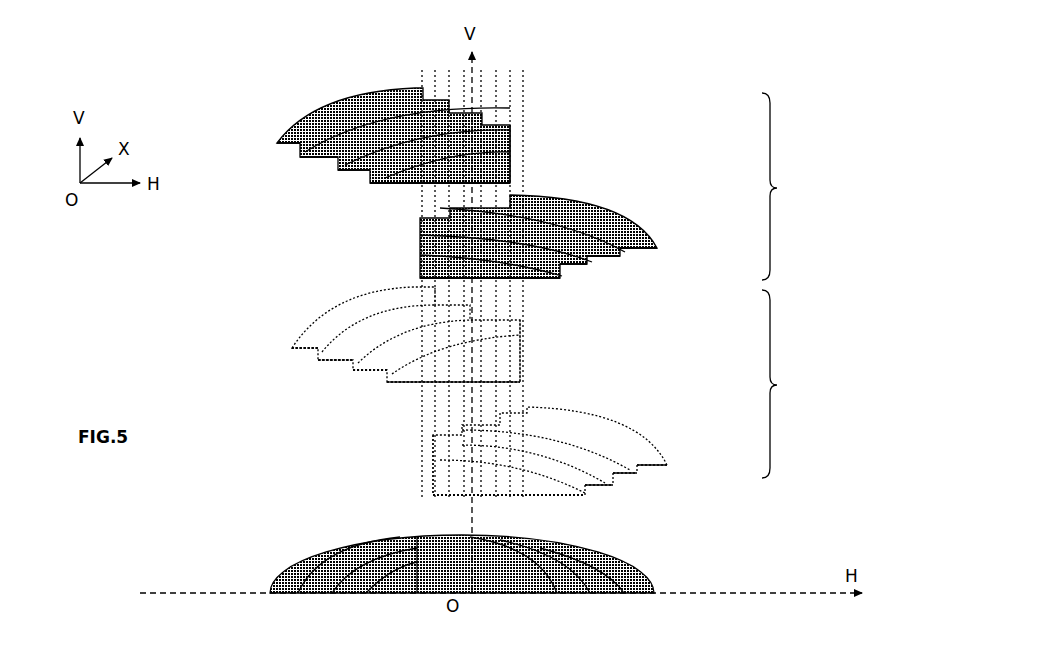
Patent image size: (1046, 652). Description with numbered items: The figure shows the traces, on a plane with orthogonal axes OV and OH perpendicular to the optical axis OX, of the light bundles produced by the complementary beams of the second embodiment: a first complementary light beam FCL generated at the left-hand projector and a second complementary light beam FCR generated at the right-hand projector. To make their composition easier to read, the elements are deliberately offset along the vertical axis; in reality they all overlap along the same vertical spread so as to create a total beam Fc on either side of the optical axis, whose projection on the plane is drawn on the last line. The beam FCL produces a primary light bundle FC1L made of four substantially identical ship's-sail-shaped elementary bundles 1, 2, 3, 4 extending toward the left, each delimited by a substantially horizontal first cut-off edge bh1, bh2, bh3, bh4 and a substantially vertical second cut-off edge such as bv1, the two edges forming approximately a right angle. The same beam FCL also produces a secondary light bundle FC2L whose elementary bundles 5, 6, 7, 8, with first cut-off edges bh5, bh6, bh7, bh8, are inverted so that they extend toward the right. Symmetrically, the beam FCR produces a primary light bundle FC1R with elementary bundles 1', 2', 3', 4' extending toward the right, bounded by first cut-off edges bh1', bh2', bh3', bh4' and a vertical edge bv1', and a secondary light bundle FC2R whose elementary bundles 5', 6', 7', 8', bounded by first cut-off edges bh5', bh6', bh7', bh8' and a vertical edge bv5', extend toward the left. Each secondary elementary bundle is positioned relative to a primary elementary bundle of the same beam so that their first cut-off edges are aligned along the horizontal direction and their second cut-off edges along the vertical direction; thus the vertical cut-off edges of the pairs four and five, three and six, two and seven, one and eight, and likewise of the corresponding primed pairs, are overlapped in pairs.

The primary light bundle FC1L is at (292, 102).
The secondary light bundle FC2L is at (619, 196).
The secondary light bundle FC2R is at (277, 327).
The primary light bundle FC1R is at (628, 412).
The total beam Fc is at (293, 550).
The first complementary light beam FCL is at (789, 186).
The second complementary light beam FCR is at (789, 384).
The first cut-off edge bh1 is at (437, 212).
The first cut-off edge bh2 is at (340, 199).
The first cut-off edge bh3 is at (306, 185).
The first cut-off edge bh4 is at (258, 170).
The first cut-off edge bh5 is at (511, 301).
The first cut-off edge bh6 is at (603, 287).
The first cut-off edge bh7 is at (633, 276).
The first cut-off edge bh8 is at (664, 231).
The second cut-off edge bv1 is at (532, 146).
The first cut-off edge bh1' is at (525, 518).
The first cut-off edge bh2' is at (626, 510).
The first cut-off edge bh3' is at (658, 492).
The first cut-off edge bh4' is at (681, 447).
The first cut-off edge bh5' is at (441, 410).
The first cut-off edge bh6' is at (353, 403).
The first cut-off edge bh7' is at (317, 389).
The first cut-off edge bh8' is at (269, 374).
The second cut-off edge bv1' is at (396, 466).
The second cut-off edge bv5' is at (550, 351).
The primary elementary bundle 1 is at (440, 174).
The primary elementary bundle 2 is at (354, 161).
The primary elementary bundle 3 is at (319, 149).
The primary elementary bundle 4 is at (289, 137).
The secondary elementary bundle 5 is at (490, 267).
The secondary elementary bundle 6 is at (573, 255).
The secondary elementary bundle 7 is at (603, 244).
The secondary elementary bundle 8 is at (638, 237).
The primary elementary bundle 1' is at (509, 483).
The primary elementary bundle 2' is at (599, 476).
The primary elementary bundle 3' is at (625, 462).
The primary elementary bundle 4' is at (652, 453).
The secondary elementary bundle 5' is at (453, 370).
The secondary elementary bundle 6' is at (370, 359).
The secondary elementary bundle 7' is at (337, 347).
The secondary elementary bundle 8' is at (308, 335).